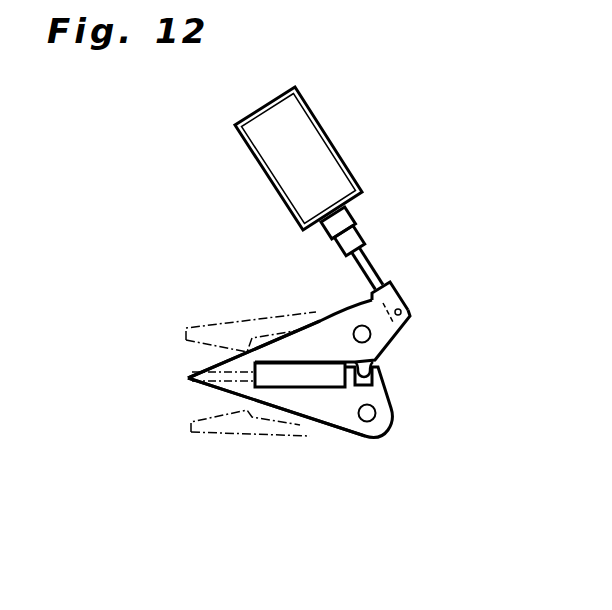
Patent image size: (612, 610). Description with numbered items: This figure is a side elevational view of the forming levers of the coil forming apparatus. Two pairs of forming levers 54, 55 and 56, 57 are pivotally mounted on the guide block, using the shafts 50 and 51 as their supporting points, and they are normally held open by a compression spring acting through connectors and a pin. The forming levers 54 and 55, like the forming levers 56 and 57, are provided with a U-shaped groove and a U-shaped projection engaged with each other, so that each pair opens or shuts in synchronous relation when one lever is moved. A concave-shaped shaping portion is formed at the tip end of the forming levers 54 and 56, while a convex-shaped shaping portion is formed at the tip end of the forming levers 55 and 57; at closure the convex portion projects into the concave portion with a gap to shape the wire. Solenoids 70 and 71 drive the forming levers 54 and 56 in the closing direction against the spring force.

The solenoid 70 is at (310, 158).
The solenoid 71 is at (406, 219).
The forming lever 54 is at (287, 342).
The forming lever 56 is at (254, 311).
The forming lever 55 is at (333, 407).
The forming lever 57 is at (286, 452).
The shaft 50 is at (362, 334).
The shaft 51 is at (367, 413).